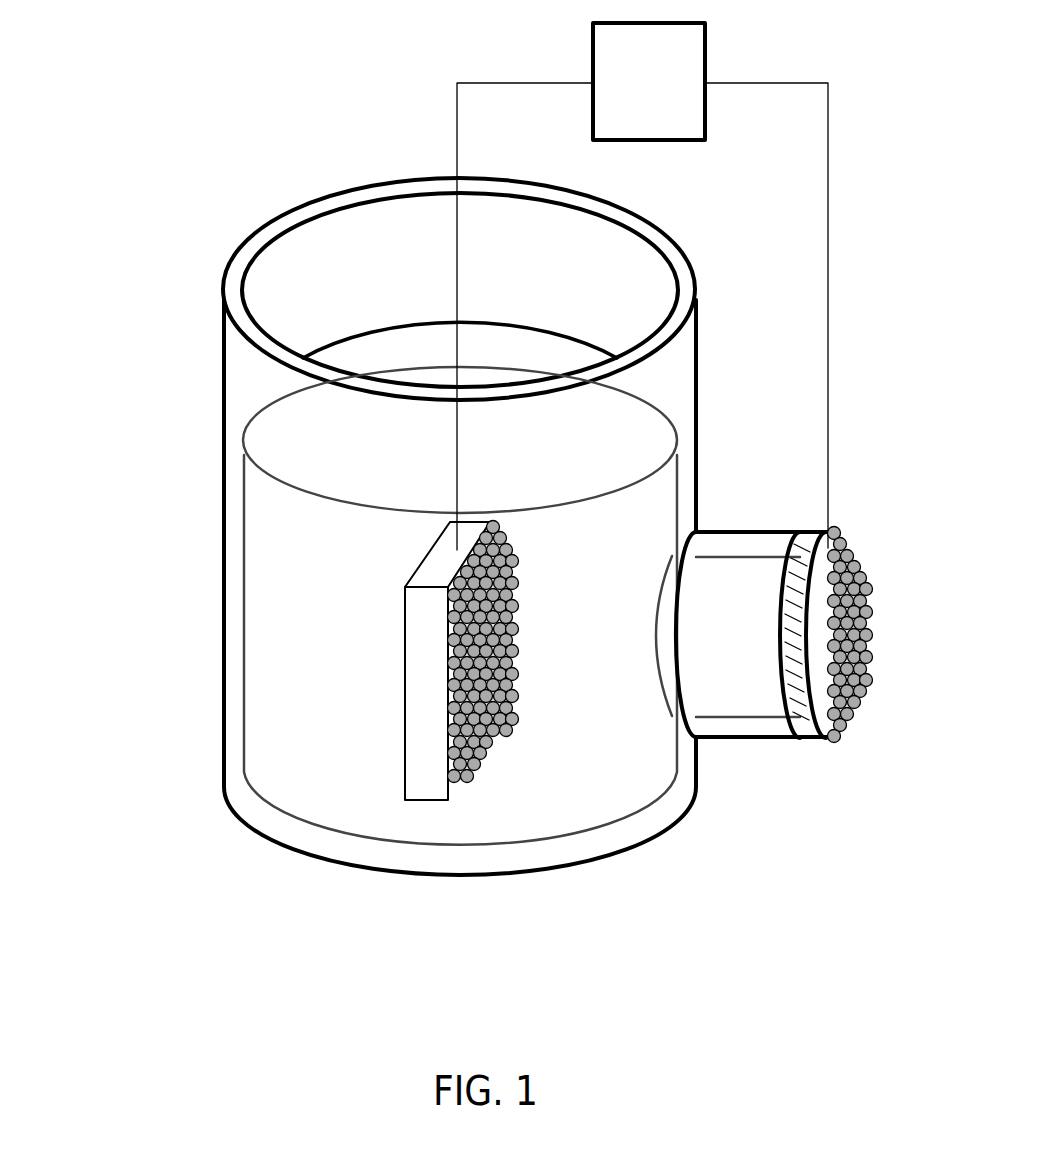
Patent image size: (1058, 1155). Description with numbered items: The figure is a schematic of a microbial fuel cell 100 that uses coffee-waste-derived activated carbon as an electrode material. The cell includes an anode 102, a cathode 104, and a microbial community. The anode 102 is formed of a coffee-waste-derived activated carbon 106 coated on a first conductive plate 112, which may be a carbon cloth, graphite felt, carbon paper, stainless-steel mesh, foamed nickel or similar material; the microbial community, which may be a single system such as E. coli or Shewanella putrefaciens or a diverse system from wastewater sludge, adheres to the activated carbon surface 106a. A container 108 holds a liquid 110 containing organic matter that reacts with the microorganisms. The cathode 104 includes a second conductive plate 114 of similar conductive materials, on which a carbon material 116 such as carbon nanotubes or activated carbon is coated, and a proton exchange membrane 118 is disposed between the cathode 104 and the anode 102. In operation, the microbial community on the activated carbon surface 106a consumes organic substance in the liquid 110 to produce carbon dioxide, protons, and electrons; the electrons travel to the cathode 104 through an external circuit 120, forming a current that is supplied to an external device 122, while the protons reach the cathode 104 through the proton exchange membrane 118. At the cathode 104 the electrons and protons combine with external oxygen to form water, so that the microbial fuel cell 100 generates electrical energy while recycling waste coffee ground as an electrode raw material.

The microbial fuel cell 100 is at (211, 68).
The anode 102 is at (526, 775).
The cathode 104 is at (788, 670).
The coffee-waste-derived activated carbon 106 is at (571, 741).
The activated carbon surface 106a is at (505, 723).
The container 108 is at (222, 358).
The liquid 110 is at (275, 614).
The first conductive plate 112 is at (428, 792).
The second conductive plate 114 is at (840, 733).
The carbon material 116 is at (868, 690).
The proton exchange membrane 118 is at (812, 532).
The external circuit 120 is at (581, 286).
The external device 122 is at (828, 152).